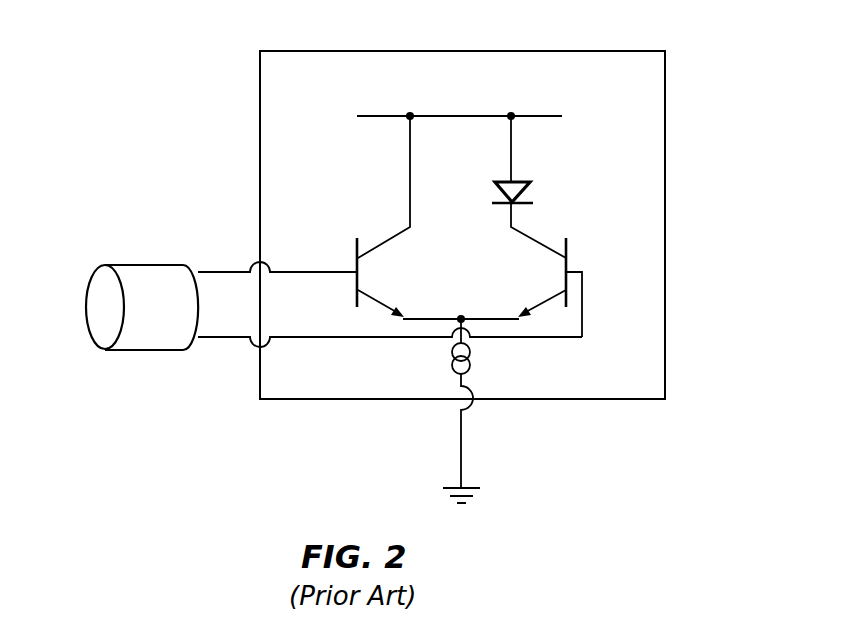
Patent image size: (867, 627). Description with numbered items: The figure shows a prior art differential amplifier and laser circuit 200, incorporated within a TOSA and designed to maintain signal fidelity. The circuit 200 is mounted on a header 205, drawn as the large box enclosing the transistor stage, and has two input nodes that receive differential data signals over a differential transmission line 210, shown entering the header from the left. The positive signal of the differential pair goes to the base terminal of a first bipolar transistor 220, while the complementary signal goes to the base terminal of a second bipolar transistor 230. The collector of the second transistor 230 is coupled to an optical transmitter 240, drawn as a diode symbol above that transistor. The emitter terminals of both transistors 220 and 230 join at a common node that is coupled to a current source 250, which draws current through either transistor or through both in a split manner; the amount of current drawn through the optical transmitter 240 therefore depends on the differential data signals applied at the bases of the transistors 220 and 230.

The differential amplifier and laser circuit 200 is at (170, 92).
The header 205 is at (665, 222).
The differential transmission line 210 is at (142, 265).
The first bipolar transistor 220 is at (358, 266).
The second bipolar transistor 230 is at (566, 266).
The optical transmitter 240 is at (521, 184).
The current source 250 is at (470, 358).